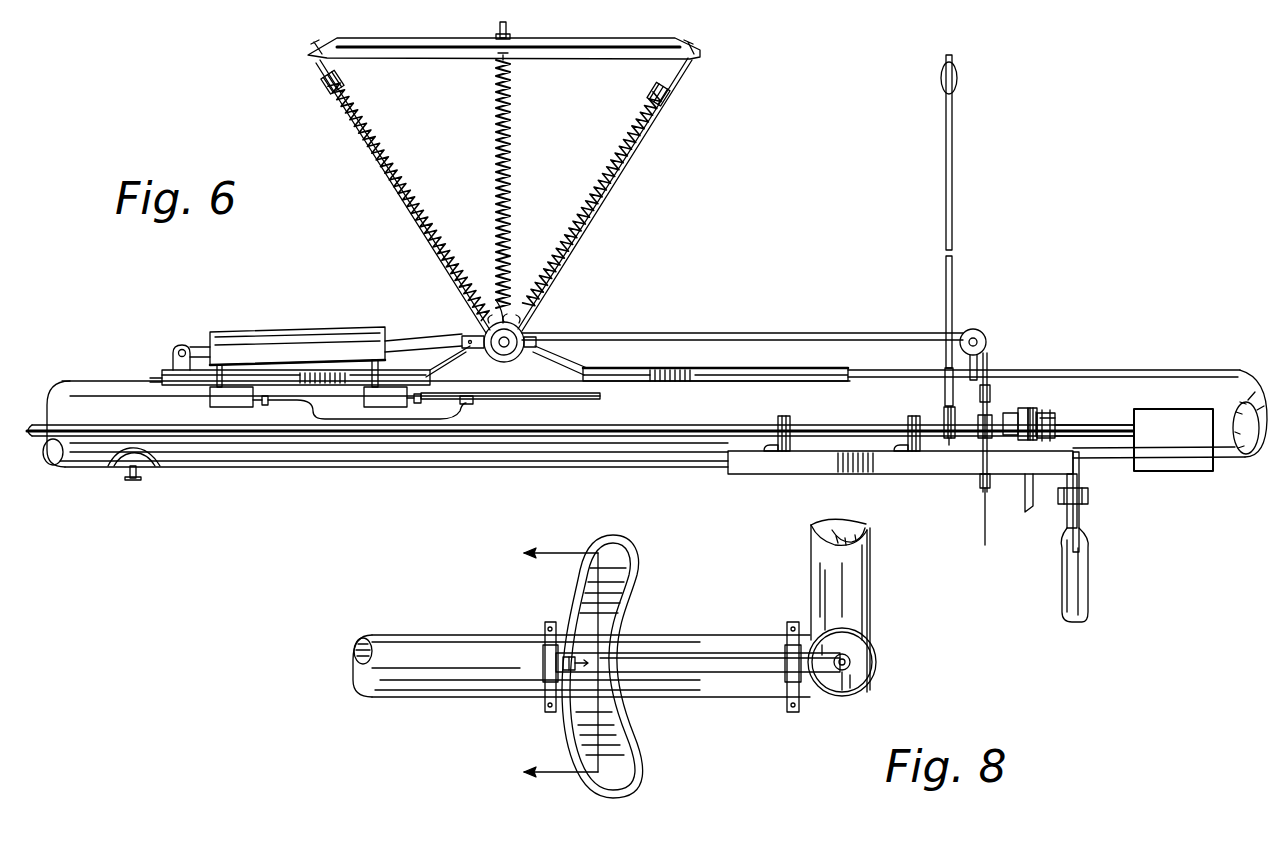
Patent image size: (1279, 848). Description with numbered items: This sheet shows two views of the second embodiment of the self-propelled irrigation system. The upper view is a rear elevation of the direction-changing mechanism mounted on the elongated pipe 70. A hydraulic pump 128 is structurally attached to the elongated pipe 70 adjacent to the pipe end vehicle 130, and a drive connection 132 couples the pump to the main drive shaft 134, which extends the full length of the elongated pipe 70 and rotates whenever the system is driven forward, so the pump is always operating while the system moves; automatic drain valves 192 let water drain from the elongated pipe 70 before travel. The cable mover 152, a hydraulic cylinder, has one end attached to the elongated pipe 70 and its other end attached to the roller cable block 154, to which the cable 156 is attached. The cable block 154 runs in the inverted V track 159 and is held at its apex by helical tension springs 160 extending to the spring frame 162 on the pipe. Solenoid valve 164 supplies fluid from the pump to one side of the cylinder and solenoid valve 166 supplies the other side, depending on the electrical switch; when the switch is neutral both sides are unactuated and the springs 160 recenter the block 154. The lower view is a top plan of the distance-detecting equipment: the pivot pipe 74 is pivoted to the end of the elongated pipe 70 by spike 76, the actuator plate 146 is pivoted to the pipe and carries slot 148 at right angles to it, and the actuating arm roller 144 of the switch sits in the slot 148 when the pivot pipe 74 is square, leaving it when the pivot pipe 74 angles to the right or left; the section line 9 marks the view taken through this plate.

In FIG. 6, the spring frame 162 is at (612, 57).
In FIG. 6, the helical tension springs 160 is at (516, 122).
In FIG. 6, the roller cable block 154 is at (511, 358).
In FIG. 6, the cable 156 is at (625, 333).
In FIG. 6, the inverted V track 159 is at (588, 368).
In FIG. 6, the cable mover 152 is at (306, 330).
In FIG. 6, the solenoid valve 166 is at (231, 397).
In FIG. 6, the solenoid valve 164 is at (385, 397).
In FIG. 6, the elongated pipe 70 is at (1142, 370).
In FIG. 8, the elongated pipe 70 is at (874, 580).
In FIG. 6, the main drive shaft 134 is at (660, 425).
In FIG. 6, the automatic drain valves 192 is at (140, 472).
In FIG. 6, the drive connection 132 is at (1118, 420).
In FIG. 6, the hydraulic pump 128 is at (1186, 474).
In FIG. 6, the pipe end vehicle 130 is at (1090, 576).
In FIG. 8, the pivot pipe 74 is at (428, 635).
In FIG. 8, the slot 148 is at (620, 653).
In FIG. 8, the actuating arm roller 144 is at (566, 655).
In FIG. 8, the actuator plate 146 is at (633, 563).
In FIG. 8, the section line 9- 9 is at (548, 662).
In FIG. 8, the spike 76 is at (878, 646).